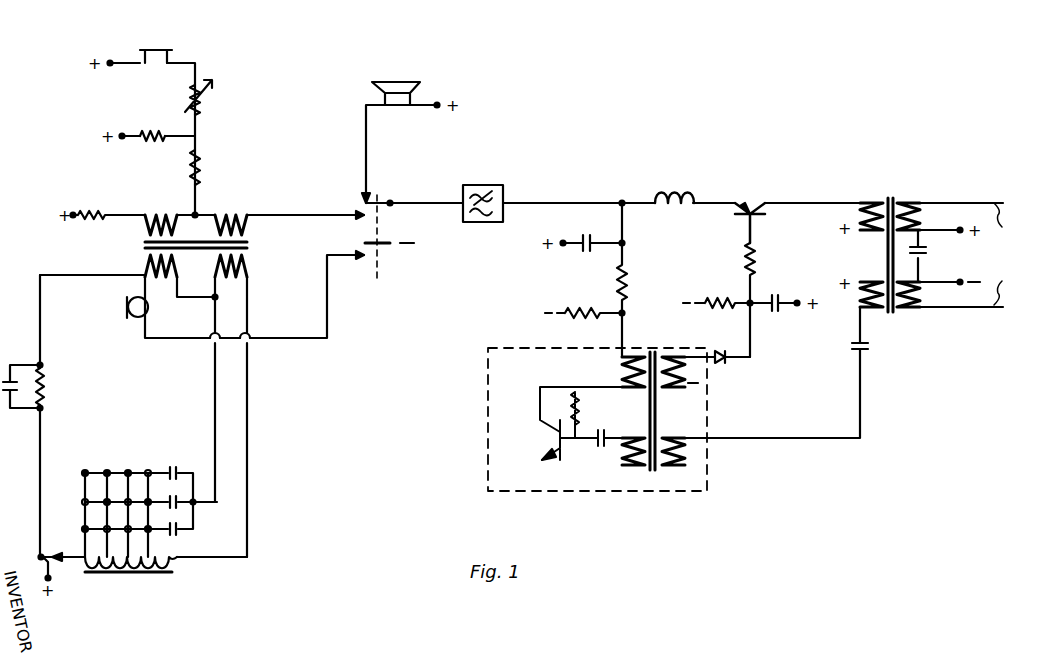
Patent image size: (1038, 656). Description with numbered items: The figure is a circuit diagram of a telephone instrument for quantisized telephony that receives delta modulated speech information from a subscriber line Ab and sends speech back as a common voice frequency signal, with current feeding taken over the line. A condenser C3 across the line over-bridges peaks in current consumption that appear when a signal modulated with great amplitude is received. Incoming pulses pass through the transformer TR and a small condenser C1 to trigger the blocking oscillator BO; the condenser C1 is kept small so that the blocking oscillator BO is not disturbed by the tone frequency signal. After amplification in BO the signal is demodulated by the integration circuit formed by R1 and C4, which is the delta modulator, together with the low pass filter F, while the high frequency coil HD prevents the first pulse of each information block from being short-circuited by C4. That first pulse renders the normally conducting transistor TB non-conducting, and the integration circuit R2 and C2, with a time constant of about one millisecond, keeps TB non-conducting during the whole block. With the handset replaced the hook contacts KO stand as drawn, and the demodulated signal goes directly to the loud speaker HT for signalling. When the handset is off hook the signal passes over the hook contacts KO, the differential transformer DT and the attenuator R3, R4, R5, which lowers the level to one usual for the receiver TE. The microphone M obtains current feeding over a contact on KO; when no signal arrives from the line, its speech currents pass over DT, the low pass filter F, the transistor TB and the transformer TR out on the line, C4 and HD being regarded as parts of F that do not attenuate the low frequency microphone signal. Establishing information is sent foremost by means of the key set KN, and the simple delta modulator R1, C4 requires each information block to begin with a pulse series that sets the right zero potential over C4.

The receiver TE is at (156, 43).
The attenuator resistor R5 is at (214, 97).
The attenuator resistor R4 is at (153, 147).
The attenuator resistor R3 is at (210, 175).
The differential transformer DT is at (217, 246).
The microphone M is at (121, 309).
The key set KN is at (143, 472).
The loud speaker HT is at (396, 76).
The hook contacts KO is at (376, 252).
The low pass filter F is at (483, 191).
The condenser C4 is at (592, 231).
The resistor R1 is at (640, 280).
The high frequency coil HD is at (674, 185).
The transistor TB is at (749, 205).
The resistor R2 is at (716, 290).
The condenser C2 is at (773, 315).
The transformer TR is at (890, 240).
The condenser C3 is at (932, 256).
The subscriber line Ab is at (1006, 254).
The condenser C1 is at (792, 372).
The blocking oscillator BO is at (640, 483).